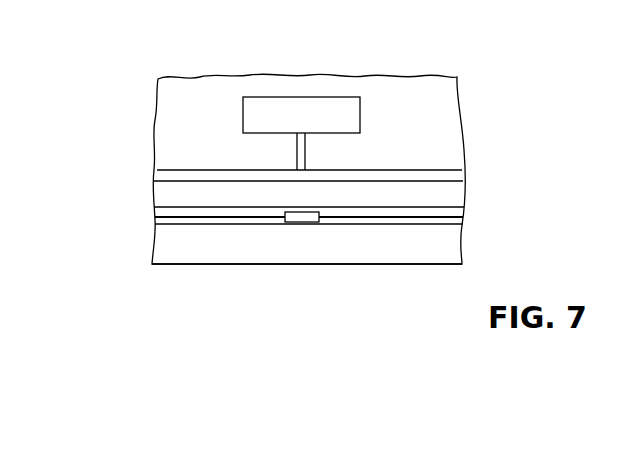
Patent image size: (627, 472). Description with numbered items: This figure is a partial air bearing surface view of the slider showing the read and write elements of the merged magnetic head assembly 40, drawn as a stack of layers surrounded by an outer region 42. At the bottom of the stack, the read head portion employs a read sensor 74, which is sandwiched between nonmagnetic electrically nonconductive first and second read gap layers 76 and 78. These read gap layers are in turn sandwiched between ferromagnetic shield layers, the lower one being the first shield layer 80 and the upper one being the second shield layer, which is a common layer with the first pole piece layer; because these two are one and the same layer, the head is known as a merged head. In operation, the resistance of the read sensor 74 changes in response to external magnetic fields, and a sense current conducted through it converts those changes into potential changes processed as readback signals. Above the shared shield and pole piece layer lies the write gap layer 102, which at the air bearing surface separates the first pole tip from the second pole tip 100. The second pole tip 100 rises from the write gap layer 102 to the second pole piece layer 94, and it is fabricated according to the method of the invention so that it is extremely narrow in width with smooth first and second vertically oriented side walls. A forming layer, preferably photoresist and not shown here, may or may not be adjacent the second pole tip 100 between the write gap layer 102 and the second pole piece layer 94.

The merged magnetic head assembly 40 is at (478, 91).
The dielectric layer 42 is at (160, 102).
The read sensor 74 is at (300, 222).
The first read gap layer 76 is at (214, 226).
The second read gap layer 78 is at (423, 212).
The first shield layer 80 is at (450, 248).
The second pole piece layer 94 is at (348, 117).
The second pole tip 100 is at (346, 153).
The write gap layer 102 is at (455, 176).